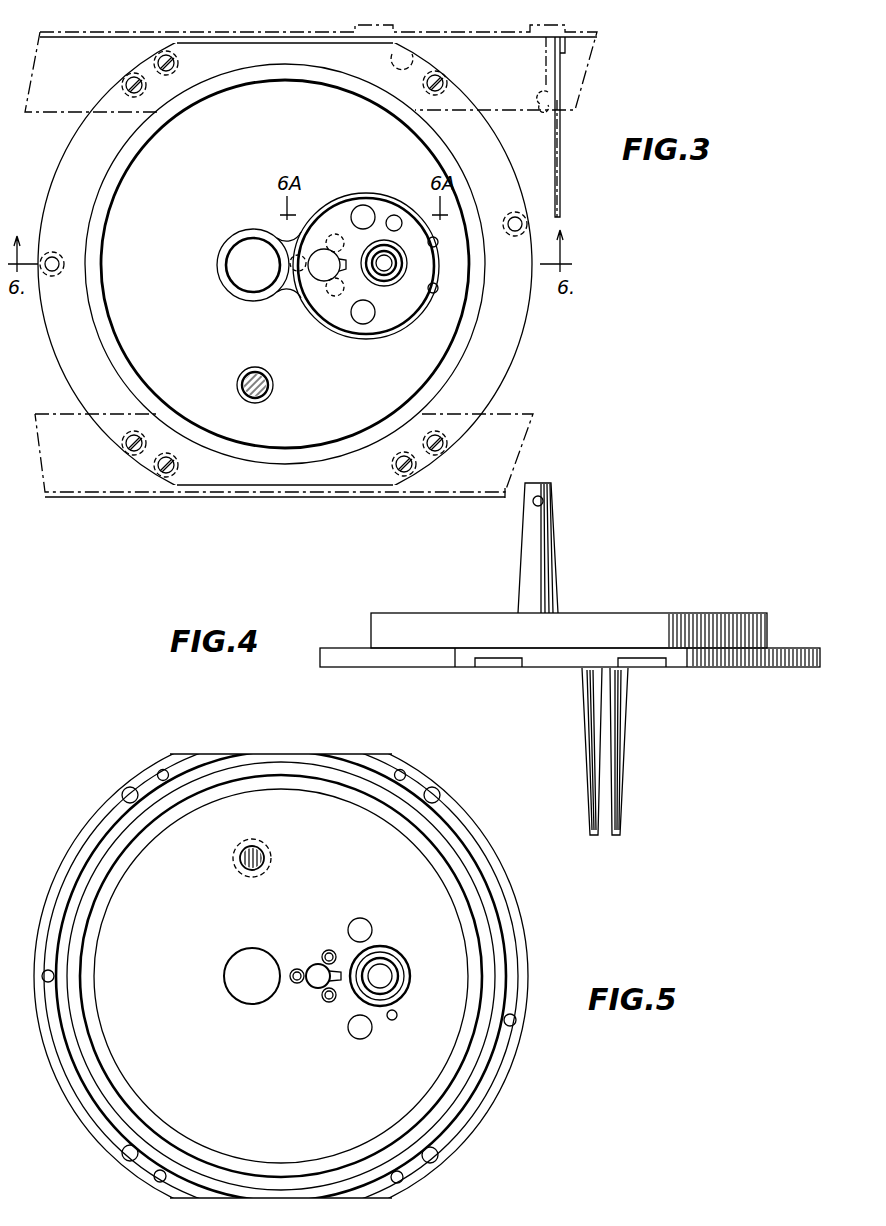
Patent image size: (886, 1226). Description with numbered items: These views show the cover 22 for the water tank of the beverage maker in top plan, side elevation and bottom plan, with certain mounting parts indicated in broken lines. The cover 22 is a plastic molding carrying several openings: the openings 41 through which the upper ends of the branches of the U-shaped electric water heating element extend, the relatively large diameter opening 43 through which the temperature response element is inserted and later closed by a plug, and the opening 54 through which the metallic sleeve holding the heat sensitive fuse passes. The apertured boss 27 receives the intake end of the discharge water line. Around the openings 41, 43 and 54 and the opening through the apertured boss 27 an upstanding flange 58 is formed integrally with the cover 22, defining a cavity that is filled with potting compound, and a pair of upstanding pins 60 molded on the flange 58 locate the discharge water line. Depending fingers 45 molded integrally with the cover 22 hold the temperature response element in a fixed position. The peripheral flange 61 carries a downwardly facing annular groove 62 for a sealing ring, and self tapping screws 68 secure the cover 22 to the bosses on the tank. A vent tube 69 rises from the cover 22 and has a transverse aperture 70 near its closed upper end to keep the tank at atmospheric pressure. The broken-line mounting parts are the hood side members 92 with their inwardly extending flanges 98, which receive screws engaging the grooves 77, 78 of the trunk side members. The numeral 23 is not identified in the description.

In FIG. 3, the cover 22 is at (533, 321).
In FIG. 4, the cover 22 is at (690, 574).
In FIG. 5, the cover 22 is at (490, 813).
In FIG. 3, the opening 23 is at (249, 231).
In FIG. 5, the opening 23 is at (252, 976).
In FIG. 3, the apertured boss 27 is at (388, 283).
In FIG. 5, the apertured boss 27 is at (388, 952).
In FIG. 3, the openings 41 is at (366, 206).
In FIG. 5, the openings 41 is at (360, 918).
In FIG. 3, the opening 43 is at (322, 250).
In FIG. 5, the opening 43 is at (312, 964).
In FIG. 4, the depending fingers 45 is at (595, 732).
In FIG. 5, the depending fingers 45 is at (297, 985).
In FIG. 3, the opening 54 is at (396, 215).
In FIG. 5, the opening 54 is at (396, 1020).
In FIG. 3, the upstanding flange 58 is at (344, 188).
In FIG. 3, the upstanding pins 60 is at (437, 284).
In FIG. 3, the peripheral flange 61 is at (518, 360).
In FIG. 4, the peripheral flange 61 is at (786, 650).
In FIG. 5, the peripheral flange 61 is at (522, 918).
In FIG. 5, the annular groove 62 is at (490, 976).
In FIG. 3, the self tapping screws 68 is at (126, 80).
In FIG. 3, the vent tube 69 is at (273, 383).
In FIG. 4, the vent tube 69 is at (554, 567).
In FIG. 5, the vent tube 69 is at (266, 853).
In FIG. 4, the transverse aperture 70 is at (543, 501).
In FIG. 3, the groove 77 is at (406, 56).
In FIG. 3, the groove 78 is at (553, 99).
In FIG. 3, the hood side members 92 is at (122, 33).
In FIG. 3, the inwardly extending flanges 98 is at (583, 60).